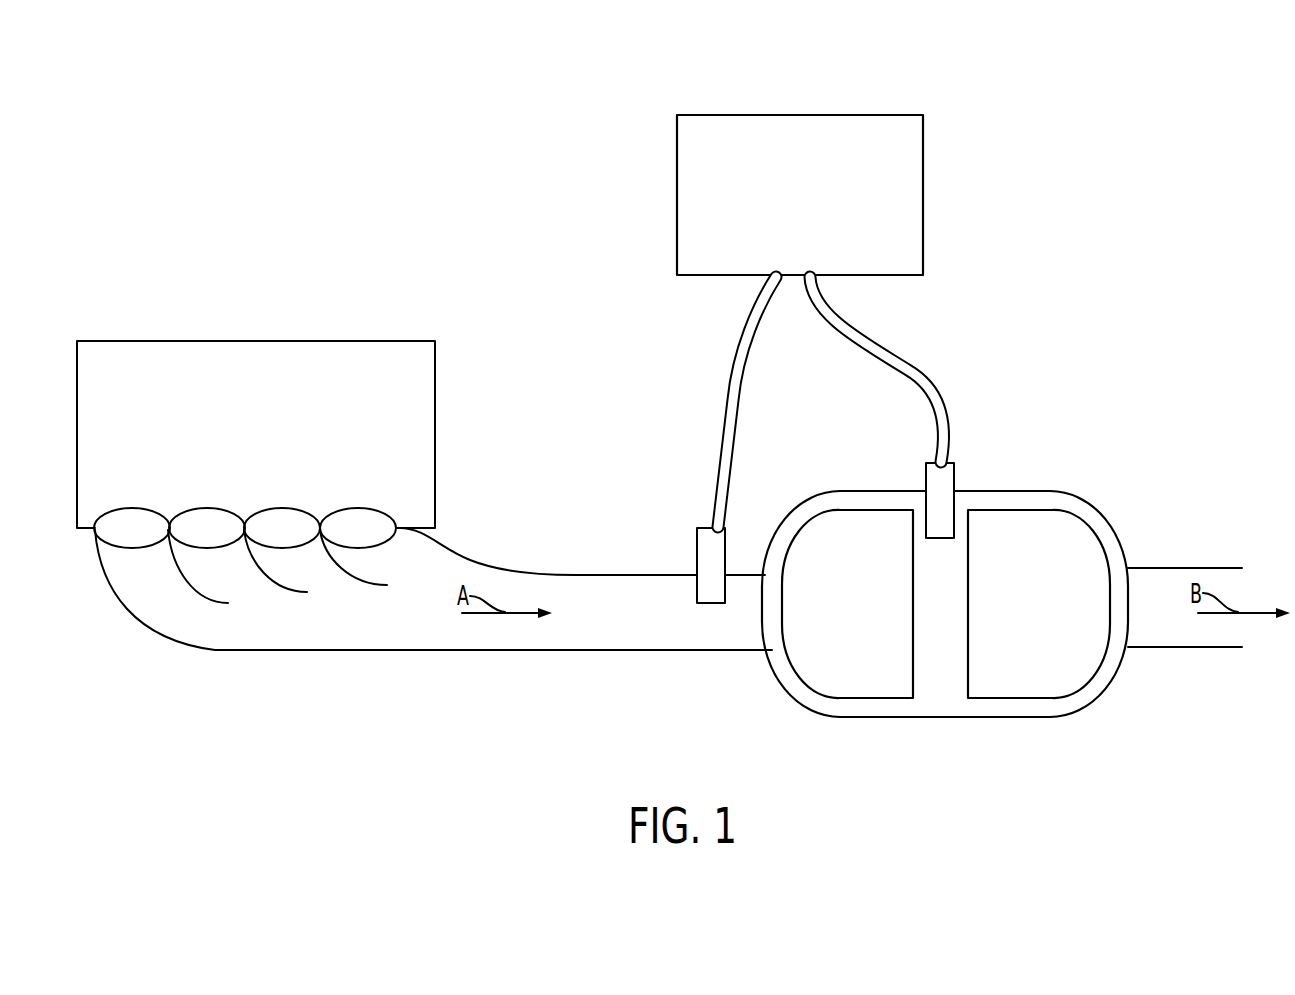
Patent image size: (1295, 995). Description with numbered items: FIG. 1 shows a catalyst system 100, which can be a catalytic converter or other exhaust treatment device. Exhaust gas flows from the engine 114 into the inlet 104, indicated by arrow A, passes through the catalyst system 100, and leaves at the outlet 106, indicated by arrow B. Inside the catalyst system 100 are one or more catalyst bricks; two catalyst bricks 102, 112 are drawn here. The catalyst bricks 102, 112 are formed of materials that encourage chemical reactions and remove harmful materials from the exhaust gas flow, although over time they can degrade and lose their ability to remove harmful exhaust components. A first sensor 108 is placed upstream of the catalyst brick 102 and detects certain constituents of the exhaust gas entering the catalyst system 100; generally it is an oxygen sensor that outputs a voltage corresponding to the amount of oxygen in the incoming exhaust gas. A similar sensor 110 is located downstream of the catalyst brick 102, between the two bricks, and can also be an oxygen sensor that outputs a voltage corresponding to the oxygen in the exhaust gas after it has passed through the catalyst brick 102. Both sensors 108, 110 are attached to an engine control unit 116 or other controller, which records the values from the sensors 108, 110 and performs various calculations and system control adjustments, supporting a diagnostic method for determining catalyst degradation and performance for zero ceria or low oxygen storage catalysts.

The catalyst system 100 is at (386, 112).
The catalyst brick 102 is at (862, 617).
The inlet 104 is at (748, 625).
The outlet 106 is at (1157, 615).
The first sensor 108 is at (684, 539).
The sensor 110 is at (967, 470).
The catalyst brick 112 is at (1053, 617).
The engine 114 is at (255, 341).
The engine control unit (ECU) 116 is at (924, 195).